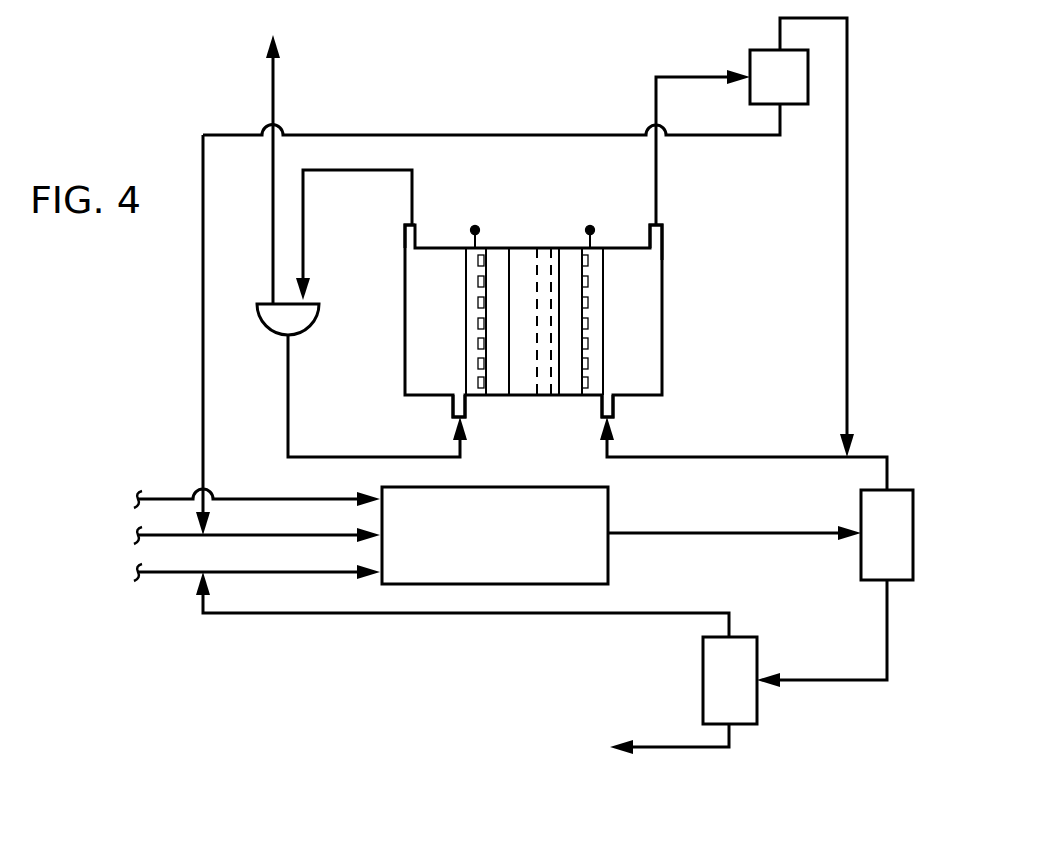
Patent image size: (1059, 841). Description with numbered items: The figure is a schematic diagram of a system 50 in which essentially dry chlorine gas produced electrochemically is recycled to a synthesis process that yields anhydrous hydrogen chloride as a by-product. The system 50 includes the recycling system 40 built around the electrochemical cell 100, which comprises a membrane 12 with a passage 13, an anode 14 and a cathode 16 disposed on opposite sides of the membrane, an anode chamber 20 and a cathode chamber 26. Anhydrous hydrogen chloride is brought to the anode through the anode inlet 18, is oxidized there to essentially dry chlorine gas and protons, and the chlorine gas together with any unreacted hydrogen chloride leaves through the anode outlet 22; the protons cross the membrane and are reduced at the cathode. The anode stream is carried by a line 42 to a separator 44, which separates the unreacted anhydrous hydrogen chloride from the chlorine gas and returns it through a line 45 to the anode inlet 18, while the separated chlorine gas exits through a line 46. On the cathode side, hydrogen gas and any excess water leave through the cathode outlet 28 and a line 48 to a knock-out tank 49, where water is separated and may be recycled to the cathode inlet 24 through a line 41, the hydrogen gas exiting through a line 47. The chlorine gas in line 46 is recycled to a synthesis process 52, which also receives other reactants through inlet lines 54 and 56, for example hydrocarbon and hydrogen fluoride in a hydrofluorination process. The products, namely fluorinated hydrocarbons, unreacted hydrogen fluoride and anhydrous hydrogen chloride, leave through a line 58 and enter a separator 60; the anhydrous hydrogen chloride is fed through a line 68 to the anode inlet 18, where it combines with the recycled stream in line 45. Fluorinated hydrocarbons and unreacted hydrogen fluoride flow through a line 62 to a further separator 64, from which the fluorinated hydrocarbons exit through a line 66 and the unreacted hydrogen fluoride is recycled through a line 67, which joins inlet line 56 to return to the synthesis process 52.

The electrochemical cell 100 is at (682, 290).
The membrane 12 is at (525, 248).
The passage 13 is at (543, 385).
The anode 14 is at (568, 360).
The cathode 16 is at (498, 370).
The anode inlet 18 is at (618, 410).
The anode chamber 20 is at (642, 368).
The anode outlet 22 is at (664, 235).
The cathode inlet 24 is at (453, 410).
The cathode chamber 26 is at (405, 275).
The cathode outlet 28 is at (418, 222).
The system 40 is at (266, 429).
The line 41 is at (323, 455).
The anode outlet line 42 is at (668, 77).
The separator 44 is at (757, 50).
The line 45 is at (845, 195).
The line 46 is at (393, 135).
The line 47 is at (272, 90).
The line 48 is at (305, 230).
The knock-out tank 49 is at (262, 322).
The system 50 is at (362, 102).
The synthesis process 52 is at (608, 560).
The reactant inlet line 54 is at (155, 495).
The reactant inlet line 56 is at (160, 575).
The line 58 is at (748, 533).
The separator 60 is at (860, 505).
The line 62 is at (885, 628).
The separator 64 is at (702, 668).
The line 66 is at (667, 742).
The line 67 is at (340, 618).
The line 68 is at (770, 457).